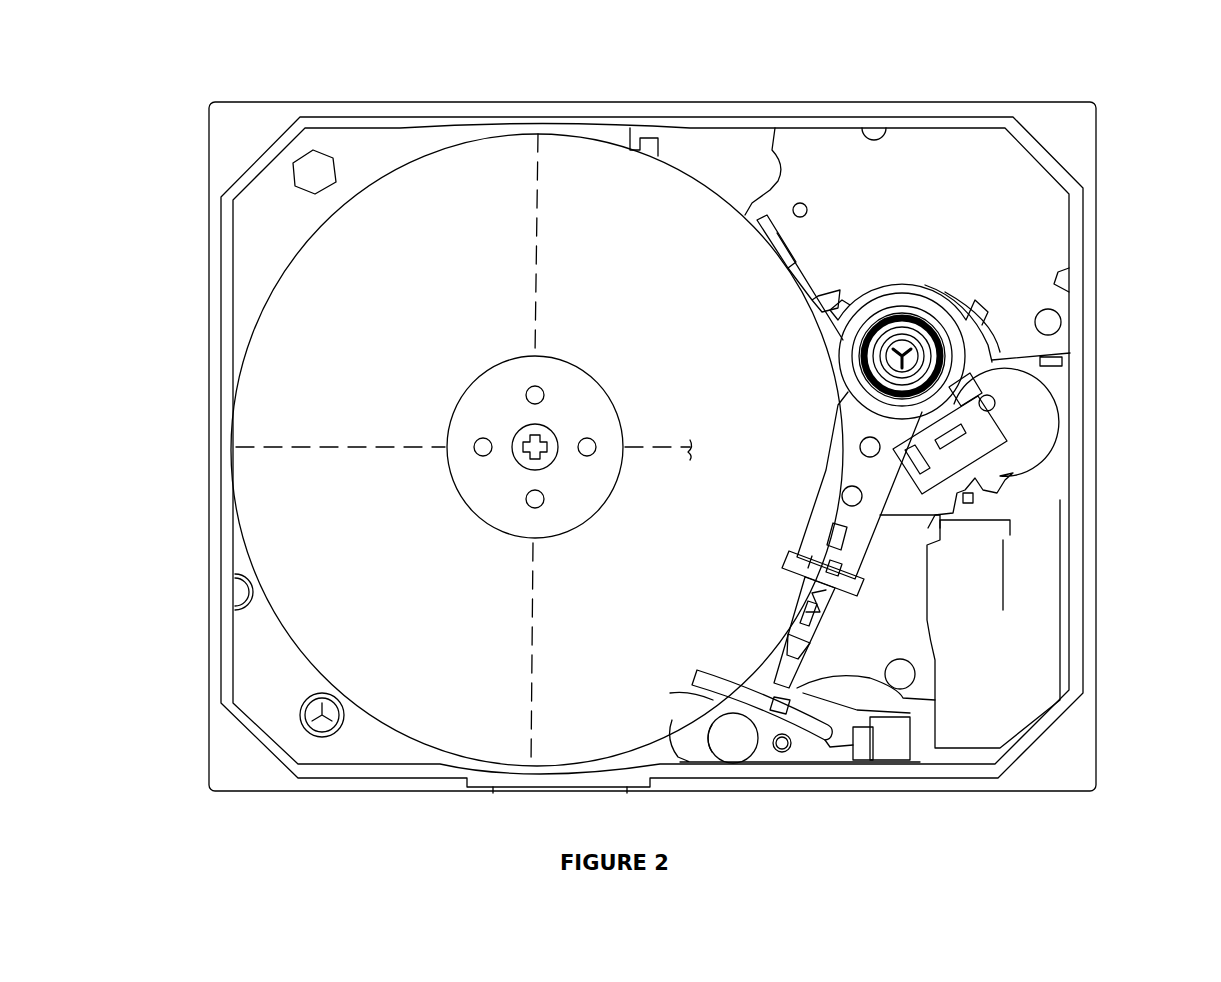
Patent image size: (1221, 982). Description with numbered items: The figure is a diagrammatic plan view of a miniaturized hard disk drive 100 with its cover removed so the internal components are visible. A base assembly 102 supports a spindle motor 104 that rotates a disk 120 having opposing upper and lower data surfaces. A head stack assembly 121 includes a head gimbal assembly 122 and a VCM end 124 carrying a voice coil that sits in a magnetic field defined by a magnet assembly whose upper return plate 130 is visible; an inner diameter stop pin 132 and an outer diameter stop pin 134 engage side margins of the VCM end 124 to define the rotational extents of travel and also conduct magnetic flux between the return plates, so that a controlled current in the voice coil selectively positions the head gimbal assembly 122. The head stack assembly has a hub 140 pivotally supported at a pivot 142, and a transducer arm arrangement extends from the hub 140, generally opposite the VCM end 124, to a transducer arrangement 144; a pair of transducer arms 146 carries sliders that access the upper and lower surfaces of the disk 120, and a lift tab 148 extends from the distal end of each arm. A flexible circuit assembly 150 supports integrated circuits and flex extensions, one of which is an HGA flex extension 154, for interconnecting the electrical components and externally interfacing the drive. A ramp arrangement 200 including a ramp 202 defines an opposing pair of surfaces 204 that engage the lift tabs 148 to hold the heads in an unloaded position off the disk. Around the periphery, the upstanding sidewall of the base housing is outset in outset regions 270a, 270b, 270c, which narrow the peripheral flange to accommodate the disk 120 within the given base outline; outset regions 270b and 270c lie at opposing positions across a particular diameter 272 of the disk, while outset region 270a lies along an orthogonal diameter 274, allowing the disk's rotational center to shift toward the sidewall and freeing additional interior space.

The hard disk drive 100 is at (970, 78).
The base assembly 102 is at (1067, 101).
The spindle motor 104 is at (585, 378).
The disk 120 is at (490, 457).
The head stack assembly 121 is at (825, 347).
The head gimbal assembly 122 is at (815, 557).
The VCM end 124 is at (867, 354).
The upper return plate 130 is at (950, 438).
The inner diameter stop pin 132 is at (1062, 318).
The outer diameter stop pin 134 is at (807, 207).
The hub 140 is at (860, 383).
The pivot 142 is at (884, 396).
The transducer arrangement 144 is at (766, 680).
The transducer arms 146 is at (812, 504).
The lift tab 148 is at (800, 716).
The flexible circuit assembly 150 is at (1034, 448).
The HGA flex extension 154 is at (1052, 398).
The ramp arrangement 200 is at (795, 757).
The ramp 202 is at (880, 717).
The surfaces 204 is at (700, 690).
The outset region 270a is at (224, 462).
The outset region 270b is at (542, 118).
The outset region 270c is at (508, 794).
The particular diameter 272 is at (540, 255).
The orthogonal diameter 274 is at (328, 436).